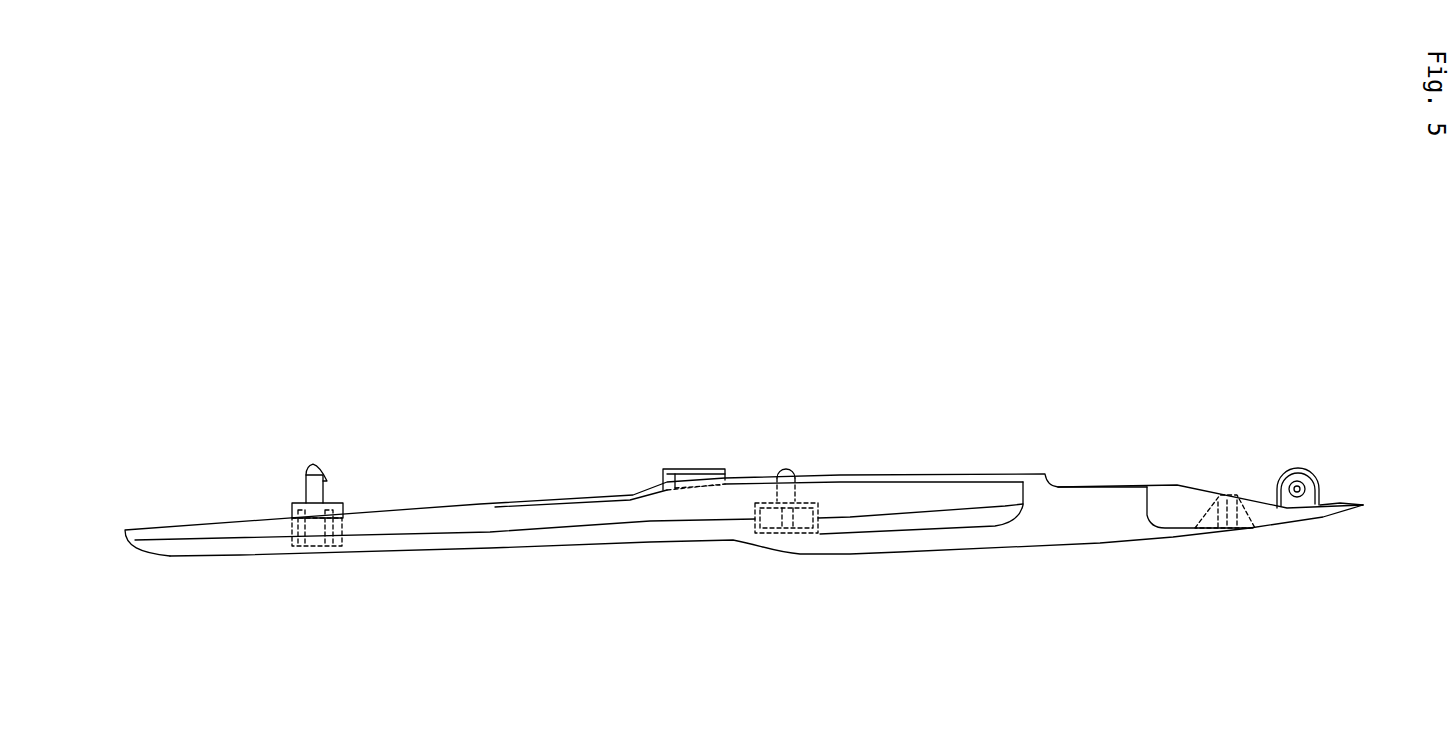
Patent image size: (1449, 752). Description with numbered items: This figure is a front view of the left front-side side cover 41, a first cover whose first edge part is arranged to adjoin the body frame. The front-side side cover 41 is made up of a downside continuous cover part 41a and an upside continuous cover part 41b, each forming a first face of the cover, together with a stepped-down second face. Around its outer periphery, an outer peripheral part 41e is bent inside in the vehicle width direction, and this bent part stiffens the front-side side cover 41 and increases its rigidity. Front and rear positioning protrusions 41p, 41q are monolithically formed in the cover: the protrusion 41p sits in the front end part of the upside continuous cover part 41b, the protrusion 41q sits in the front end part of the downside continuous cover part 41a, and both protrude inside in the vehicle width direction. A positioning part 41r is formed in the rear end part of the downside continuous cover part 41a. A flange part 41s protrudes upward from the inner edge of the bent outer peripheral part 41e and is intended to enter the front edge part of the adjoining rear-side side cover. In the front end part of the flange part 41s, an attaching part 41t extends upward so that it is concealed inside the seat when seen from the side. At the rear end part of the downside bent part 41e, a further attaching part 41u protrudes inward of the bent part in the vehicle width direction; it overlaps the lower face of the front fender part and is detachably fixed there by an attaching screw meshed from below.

The front-side side cover 41 is at (948, 551).
The downside continuous cover part 41a is at (1050, 545).
The upside continuous cover part 41b is at (448, 550).
The outer peripheral part 41e is at (1087, 486).
The positioning protrusion 41p is at (308, 475).
The positioning protrusion 41q is at (793, 468).
The positioning part 41r is at (1217, 492).
The flange part 41s is at (935, 473).
The attaching part 41t is at (722, 468).
The attaching part 41u is at (1296, 469).